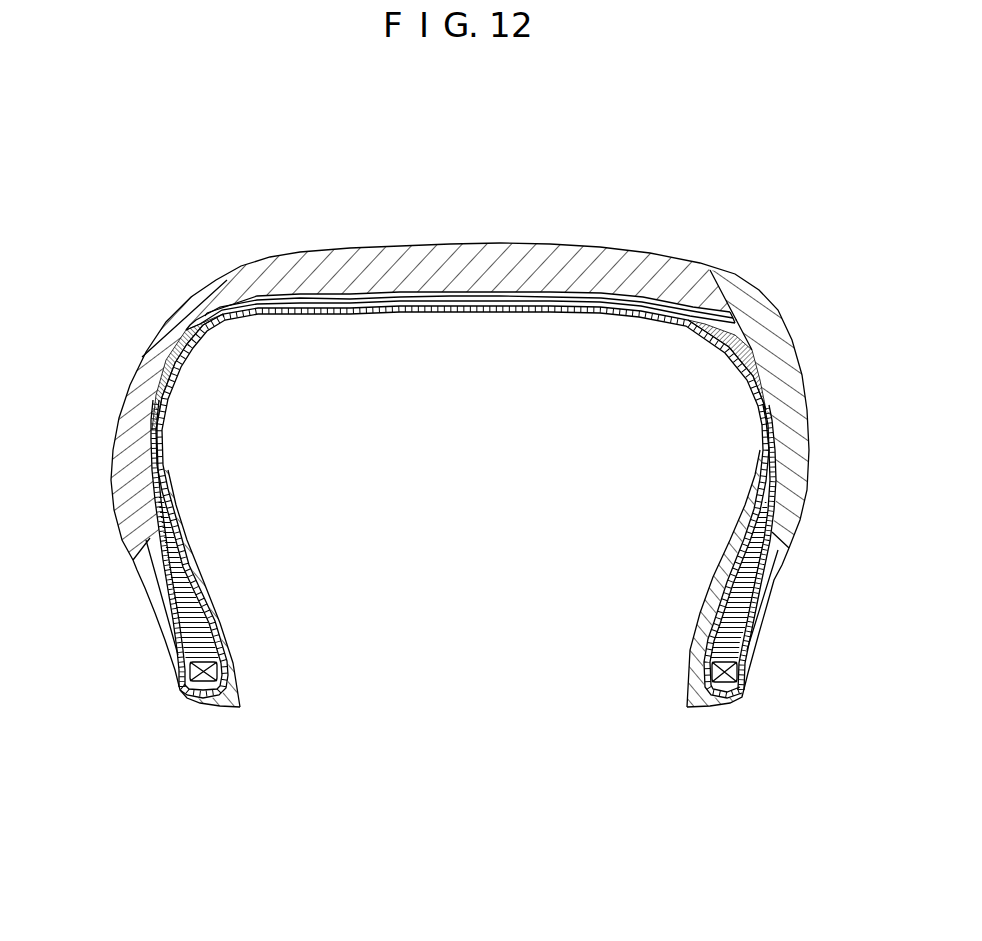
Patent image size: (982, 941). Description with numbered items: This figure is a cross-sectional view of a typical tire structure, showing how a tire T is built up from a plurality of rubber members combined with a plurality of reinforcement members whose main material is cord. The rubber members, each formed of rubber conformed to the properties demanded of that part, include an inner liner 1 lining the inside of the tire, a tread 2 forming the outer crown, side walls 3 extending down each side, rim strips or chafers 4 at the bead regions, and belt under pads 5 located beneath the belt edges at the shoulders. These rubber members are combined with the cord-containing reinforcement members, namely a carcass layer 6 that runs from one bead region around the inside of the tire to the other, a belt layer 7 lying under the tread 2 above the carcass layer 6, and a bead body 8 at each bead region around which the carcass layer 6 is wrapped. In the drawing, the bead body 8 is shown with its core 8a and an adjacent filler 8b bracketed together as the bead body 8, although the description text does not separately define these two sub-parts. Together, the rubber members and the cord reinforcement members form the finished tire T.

The tire T is at (548, 208).
The inner liner 1 is at (458, 316).
The tread 2 is at (428, 267).
The side walls 3 is at (152, 346).
The rim strips or chafers 4 is at (155, 580).
The belt under pads 5 is at (172, 356).
The carcass layer 6 is at (732, 593).
The belt layer 7 is at (336, 300).
The bead body 8 is at (522, 602).
The bead core 8a is at (210, 672).
The bead filler 8b is at (190, 620).